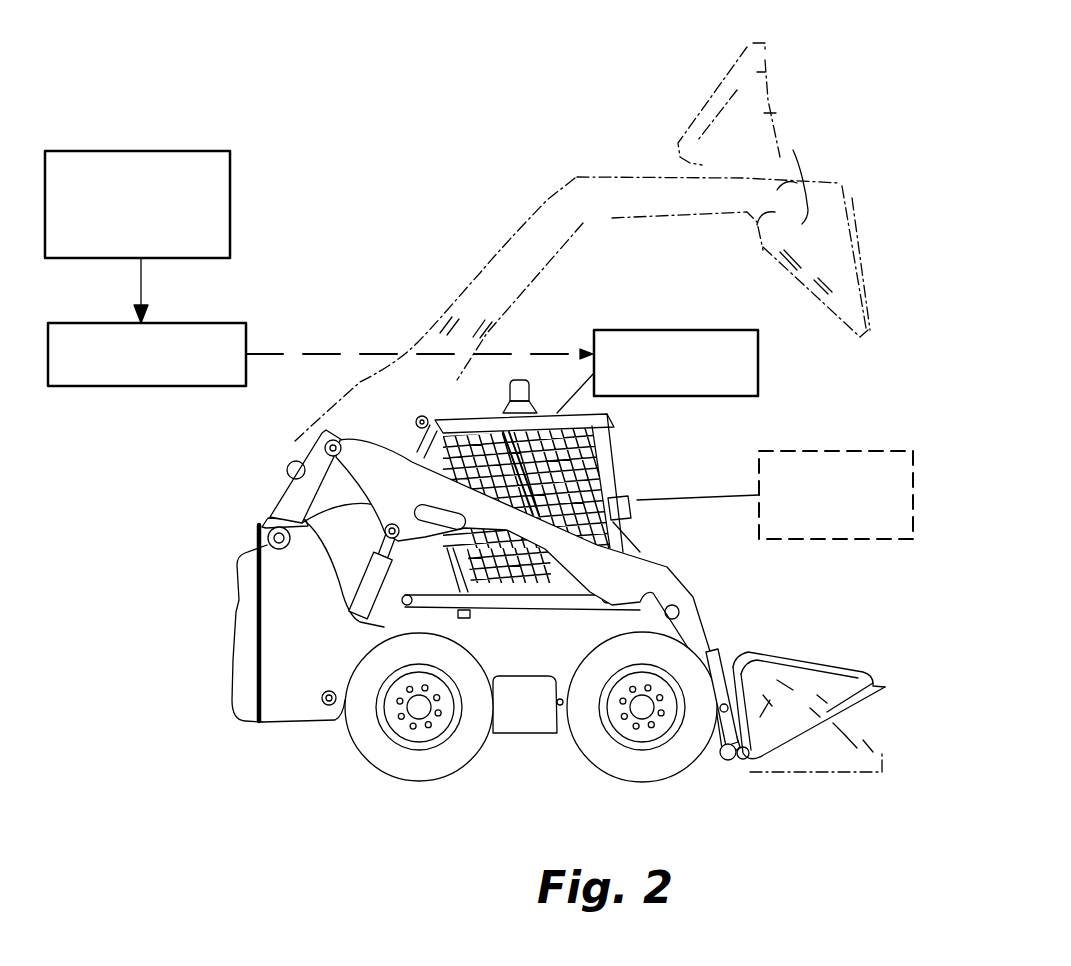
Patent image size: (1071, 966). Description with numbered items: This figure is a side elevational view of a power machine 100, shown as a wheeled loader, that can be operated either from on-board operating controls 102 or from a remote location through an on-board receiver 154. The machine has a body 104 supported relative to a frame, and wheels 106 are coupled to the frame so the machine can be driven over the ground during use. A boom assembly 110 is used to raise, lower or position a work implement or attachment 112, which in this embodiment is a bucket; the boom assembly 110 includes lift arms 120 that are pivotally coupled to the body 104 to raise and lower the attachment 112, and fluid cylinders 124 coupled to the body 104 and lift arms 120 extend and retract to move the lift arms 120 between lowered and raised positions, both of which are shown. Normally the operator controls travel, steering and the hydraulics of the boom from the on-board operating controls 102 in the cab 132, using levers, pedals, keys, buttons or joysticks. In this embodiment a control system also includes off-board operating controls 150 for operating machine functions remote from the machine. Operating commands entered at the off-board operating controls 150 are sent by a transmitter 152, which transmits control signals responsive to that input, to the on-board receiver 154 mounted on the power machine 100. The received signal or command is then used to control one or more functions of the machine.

The power machine 100 is at (890, 280).
The on-board operating controls 102 is at (860, 451).
The body 104 is at (695, 604).
The wheels 106 is at (356, 762).
The boom assembly 110 is at (648, 527).
The attachment 112 is at (800, 662).
The lift arms 120 is at (658, 583).
The fluid cylinders 124 is at (362, 606).
The cab 132 is at (590, 463).
The off-board operating controls 150 is at (244, 193).
The transmitter 152 is at (246, 337).
The on-board receiver 154 is at (640, 331).